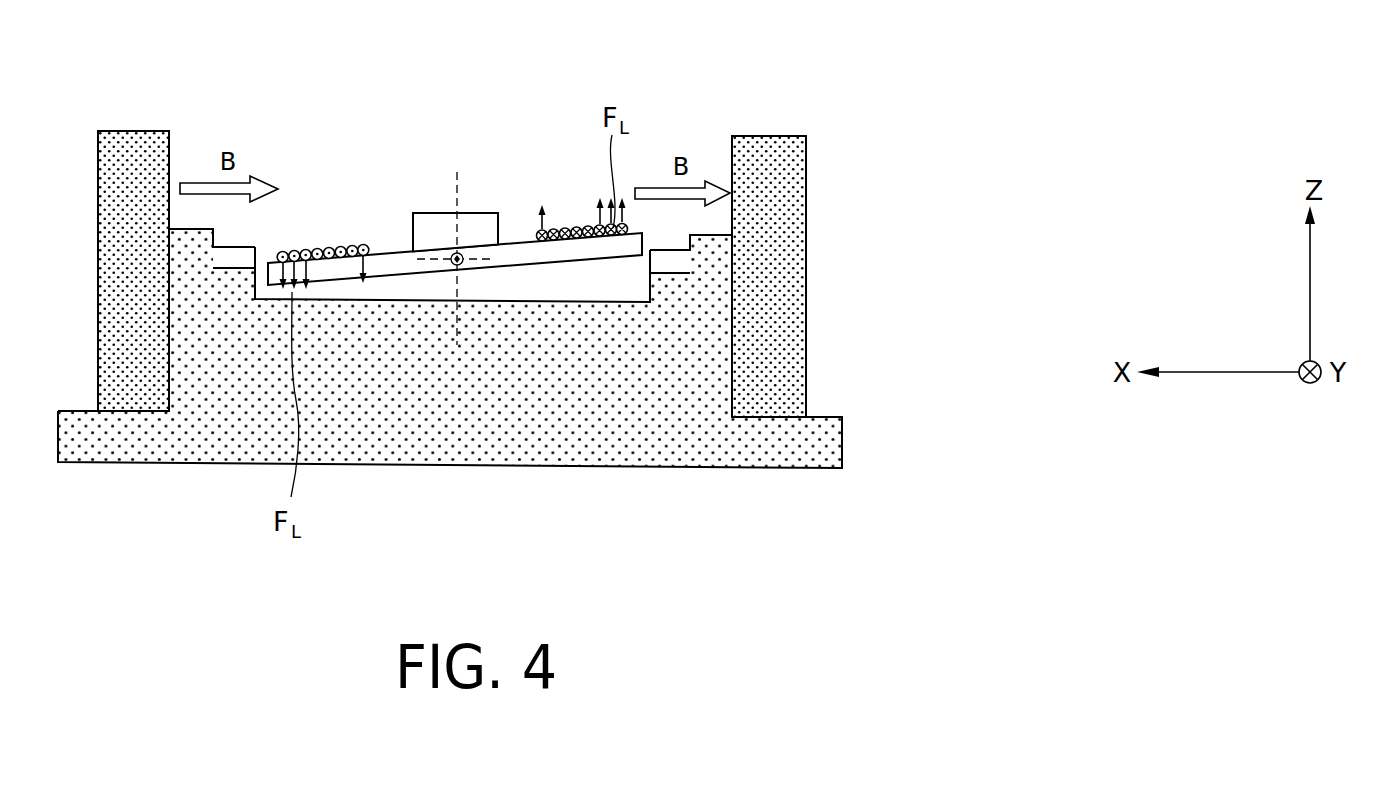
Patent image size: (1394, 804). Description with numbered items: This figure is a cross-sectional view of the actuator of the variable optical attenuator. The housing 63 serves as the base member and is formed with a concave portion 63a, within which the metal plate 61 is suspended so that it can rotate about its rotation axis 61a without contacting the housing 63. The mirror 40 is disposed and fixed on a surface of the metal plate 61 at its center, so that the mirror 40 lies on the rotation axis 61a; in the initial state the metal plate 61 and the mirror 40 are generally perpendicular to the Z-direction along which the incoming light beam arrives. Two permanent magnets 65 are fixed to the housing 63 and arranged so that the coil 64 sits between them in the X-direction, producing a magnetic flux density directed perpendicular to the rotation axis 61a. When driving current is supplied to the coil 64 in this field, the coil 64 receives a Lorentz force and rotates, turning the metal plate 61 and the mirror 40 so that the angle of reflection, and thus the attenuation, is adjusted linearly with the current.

The mirror 40 is at (430, 228).
The metal plate 61 is at (517, 243).
The rotation axis 61a is at (452, 266).
The housing 63 is at (568, 413).
The concave portion 63a is at (618, 283).
The coil 64 is at (344, 250).
The permanent magnet 65 is at (133, 145).